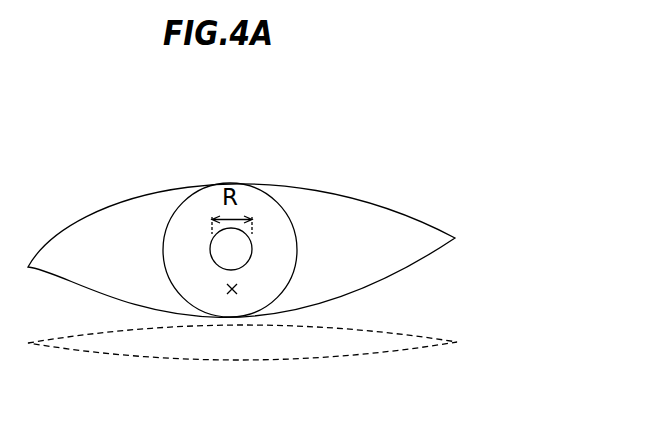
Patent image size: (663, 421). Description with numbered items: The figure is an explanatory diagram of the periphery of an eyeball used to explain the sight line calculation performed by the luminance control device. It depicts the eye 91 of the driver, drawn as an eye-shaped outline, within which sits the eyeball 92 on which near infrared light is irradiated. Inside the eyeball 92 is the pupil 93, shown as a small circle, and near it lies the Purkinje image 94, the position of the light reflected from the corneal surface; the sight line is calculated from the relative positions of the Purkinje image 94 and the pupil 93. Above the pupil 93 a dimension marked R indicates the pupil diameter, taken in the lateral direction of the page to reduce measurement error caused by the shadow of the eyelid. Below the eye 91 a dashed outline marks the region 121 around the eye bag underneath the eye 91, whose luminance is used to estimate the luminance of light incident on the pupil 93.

The eye 91 is at (421, 116).
The eyeball 92 is at (325, 230).
The pupil 93 is at (231, 249).
The Purkinje image 94 is at (228, 286).
The region around the eye bag 121 is at (452, 338).